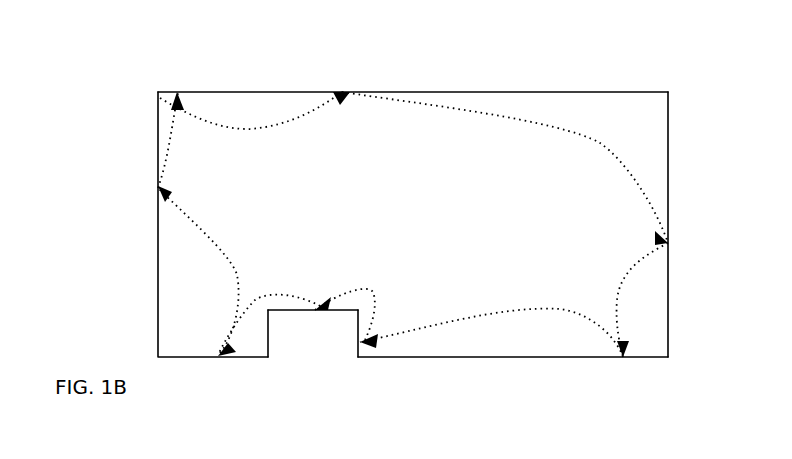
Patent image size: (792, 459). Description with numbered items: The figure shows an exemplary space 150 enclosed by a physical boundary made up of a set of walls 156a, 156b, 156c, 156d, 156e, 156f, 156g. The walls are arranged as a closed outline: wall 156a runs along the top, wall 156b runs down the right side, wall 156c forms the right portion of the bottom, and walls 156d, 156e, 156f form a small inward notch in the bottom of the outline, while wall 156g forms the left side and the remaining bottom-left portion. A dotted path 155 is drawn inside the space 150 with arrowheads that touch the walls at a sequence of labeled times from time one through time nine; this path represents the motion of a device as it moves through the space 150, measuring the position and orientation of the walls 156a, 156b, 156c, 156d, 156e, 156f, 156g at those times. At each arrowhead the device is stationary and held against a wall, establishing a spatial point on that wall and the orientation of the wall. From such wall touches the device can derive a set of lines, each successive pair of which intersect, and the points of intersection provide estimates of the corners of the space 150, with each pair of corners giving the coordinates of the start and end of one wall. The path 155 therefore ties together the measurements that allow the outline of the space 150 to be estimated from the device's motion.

The space 150 is at (403, 208).
The light ray path 155 is at (524, 62).
The wall 156a is at (620, 93).
The wall 156b is at (668, 177).
The wall 156c is at (537, 357).
The wall 156d is at (358, 330).
The wall 156e is at (310, 312).
The wall 156f is at (268, 328).
The wall 156g is at (198, 357).